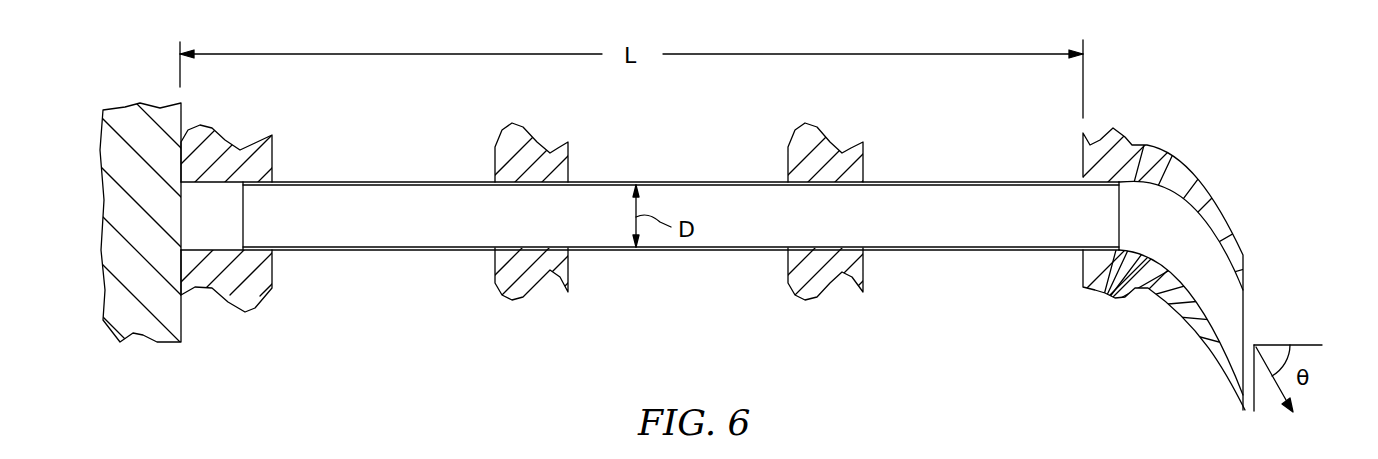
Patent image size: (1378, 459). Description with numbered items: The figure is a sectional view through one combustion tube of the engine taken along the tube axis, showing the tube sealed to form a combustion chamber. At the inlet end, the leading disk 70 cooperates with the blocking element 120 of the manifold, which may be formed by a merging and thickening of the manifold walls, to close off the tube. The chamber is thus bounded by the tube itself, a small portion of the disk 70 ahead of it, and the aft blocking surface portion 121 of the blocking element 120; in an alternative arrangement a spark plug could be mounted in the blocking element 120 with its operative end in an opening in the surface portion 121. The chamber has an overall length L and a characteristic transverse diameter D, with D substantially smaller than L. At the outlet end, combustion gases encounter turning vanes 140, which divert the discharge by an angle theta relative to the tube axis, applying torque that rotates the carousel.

The leading disk 70 is at (262, 157).
The blocking element 120 is at (142, 323).
The aft blocking surface portion 121 is at (183, 219).
The turning vanes 140 is at (1193, 177).